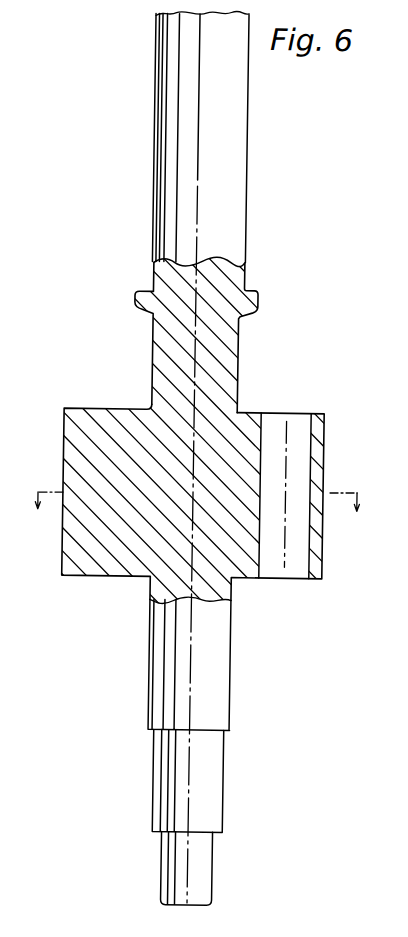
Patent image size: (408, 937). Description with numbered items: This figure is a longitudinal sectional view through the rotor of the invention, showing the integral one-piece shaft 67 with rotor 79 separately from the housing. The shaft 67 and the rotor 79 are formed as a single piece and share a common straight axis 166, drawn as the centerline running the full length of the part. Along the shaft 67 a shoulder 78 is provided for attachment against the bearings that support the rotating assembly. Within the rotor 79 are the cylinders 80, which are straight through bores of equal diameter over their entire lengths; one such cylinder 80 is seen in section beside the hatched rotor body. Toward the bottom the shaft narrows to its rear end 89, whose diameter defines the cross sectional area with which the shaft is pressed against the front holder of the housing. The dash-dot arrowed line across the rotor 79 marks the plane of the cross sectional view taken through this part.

The shaft 67 is at (227, 135).
The common straight axis 166 is at (194, 168).
The shoulder 78 is at (250, 298).
The rotor 79 is at (90, 428).
The cylinders 80 is at (296, 428).
The rear end of the shaft 89 is at (209, 853).